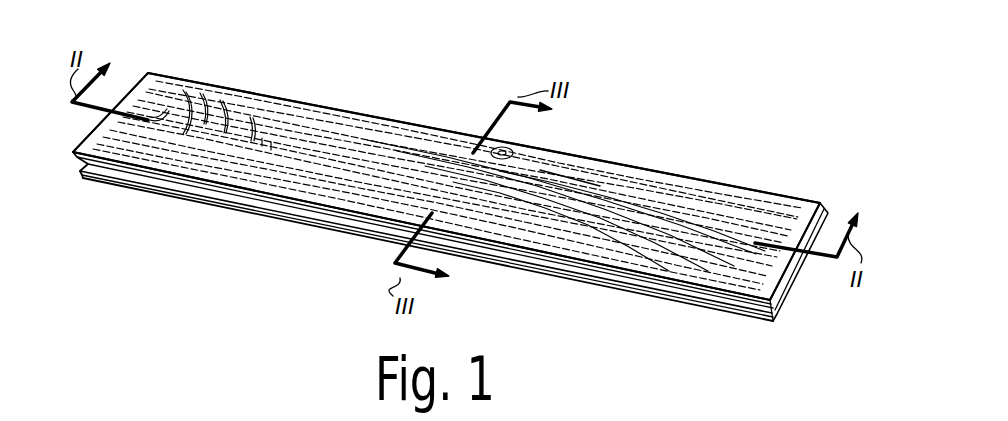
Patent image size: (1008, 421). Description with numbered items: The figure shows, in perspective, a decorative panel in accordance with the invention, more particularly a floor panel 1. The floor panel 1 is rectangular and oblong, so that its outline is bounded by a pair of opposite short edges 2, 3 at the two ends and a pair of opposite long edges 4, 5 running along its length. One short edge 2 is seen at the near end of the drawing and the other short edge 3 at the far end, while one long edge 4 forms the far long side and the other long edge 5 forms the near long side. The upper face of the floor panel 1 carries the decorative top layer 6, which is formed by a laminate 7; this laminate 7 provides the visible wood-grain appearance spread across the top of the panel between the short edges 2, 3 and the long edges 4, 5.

The floor panel 1 is at (683, 157).
The short edge 2 is at (82, 133).
The short edge 3 is at (820, 203).
The long edge 4 is at (748, 182).
The long edge 5 is at (622, 296).
The decorative top layer 6 is at (304, 140).
The laminate 7 is at (564, 197).